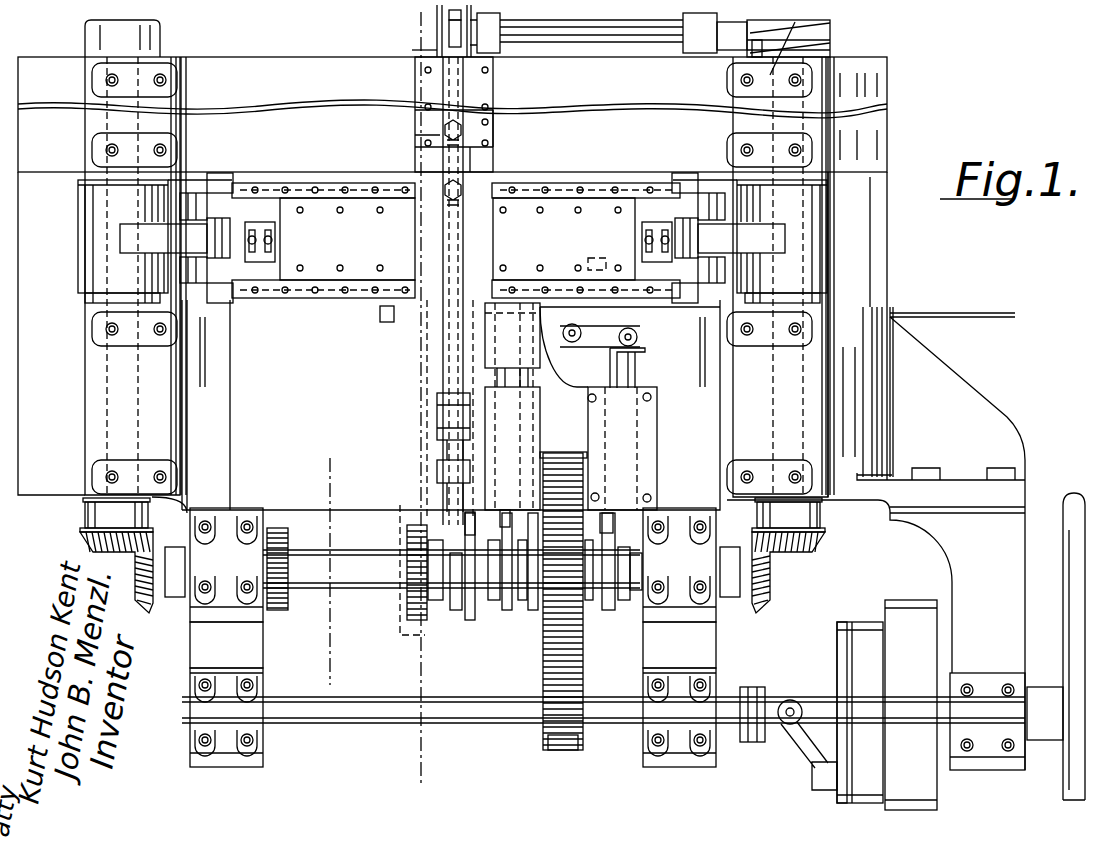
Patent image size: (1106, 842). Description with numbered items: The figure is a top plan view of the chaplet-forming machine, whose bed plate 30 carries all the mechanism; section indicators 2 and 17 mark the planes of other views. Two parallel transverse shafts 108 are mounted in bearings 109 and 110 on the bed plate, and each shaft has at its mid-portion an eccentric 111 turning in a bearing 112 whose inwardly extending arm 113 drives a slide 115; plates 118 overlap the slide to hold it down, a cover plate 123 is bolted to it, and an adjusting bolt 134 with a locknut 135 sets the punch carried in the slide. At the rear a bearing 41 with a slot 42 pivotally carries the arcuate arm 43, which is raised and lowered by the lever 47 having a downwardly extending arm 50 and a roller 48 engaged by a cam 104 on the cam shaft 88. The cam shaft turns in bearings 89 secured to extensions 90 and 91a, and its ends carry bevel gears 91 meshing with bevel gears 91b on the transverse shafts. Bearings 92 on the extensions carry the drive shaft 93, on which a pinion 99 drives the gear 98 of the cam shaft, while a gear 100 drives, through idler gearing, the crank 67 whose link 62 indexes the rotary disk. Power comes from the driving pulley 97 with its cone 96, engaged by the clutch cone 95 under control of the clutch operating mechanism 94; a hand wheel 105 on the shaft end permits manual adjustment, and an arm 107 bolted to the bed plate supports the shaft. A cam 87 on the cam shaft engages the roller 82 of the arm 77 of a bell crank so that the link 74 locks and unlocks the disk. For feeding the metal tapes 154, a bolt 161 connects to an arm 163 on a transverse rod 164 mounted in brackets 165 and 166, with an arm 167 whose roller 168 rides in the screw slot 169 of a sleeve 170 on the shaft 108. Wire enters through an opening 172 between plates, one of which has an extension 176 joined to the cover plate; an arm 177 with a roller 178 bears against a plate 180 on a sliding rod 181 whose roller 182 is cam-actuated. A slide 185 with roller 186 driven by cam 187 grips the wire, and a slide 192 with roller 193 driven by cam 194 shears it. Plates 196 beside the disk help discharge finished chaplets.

The bearing 110 is at (852, 52).
The transverse shaft 108 is at (118, 400).
The bearing 109 is at (92, 447).
The eccentric 111 is at (85, 302).
The bearing 112 is at (78, 213).
The inwardly extending arm 113 is at (165, 238).
The slide 115 is at (228, 212).
The plate 118 is at (346, 183).
The cover plate 123 is at (299, 210).
The adjusting bolt 134 is at (257, 232).
The locknut 135 is at (274, 222).
The extension 176 is at (597, 258).
The plate 196 is at (384, 322).
The bearing 41 is at (415, 128).
The slot 42 is at (492, 127).
The arcuate arm 43 is at (462, 165).
The bolt 161 is at (452, 52).
The arm 163 is at (449, 30).
The metal tape 154 is at (408, 51).
The bracket 165 is at (488, 30).
The transverse rod 164 is at (596, 30).
The bracket 166 is at (695, 35).
The upwardly extending arm 167 is at (742, 52).
The roller 168 is at (757, 48).
The screw slot 169 is at (826, 30).
The sleeve 170 is at (773, 59).
The link 74 is at (476, 371).
The link 62 is at (430, 400).
The lever 47 is at (447, 447).
The downwardly extending arm 50 is at (440, 466).
The arm 77 is at (465, 518).
The opening 172 is at (560, 318).
The roller 178 is at (638, 337).
The arm 177 is at (607, 347).
The slide 192 is at (545, 368).
The plate 180 is at (647, 350).
The sliding rod 181 is at (636, 378).
The slide 185 is at (523, 380).
The roller 186 is at (548, 508).
The roller 193 is at (505, 510).
The roller 182 is at (607, 520).
The bed plate 30 is at (552, 486).
The section line 17 is at (328, 670).
The section line 2 is at (418, 37).
The gear 100 is at (287, 549).
The cam shaft 88 is at (323, 586).
The crank 67 is at (406, 616).
The roller 48 is at (453, 572).
The roller 82 is at (457, 523).
The cam 87 is at (471, 616).
The cam 104 is at (467, 603).
The cam 187 is at (533, 610).
The cam 194 is at (506, 613).
The gear 98 is at (574, 619).
The pinion 99 is at (563, 734).
The drive shaft 93 is at (480, 718).
The extension 91a is at (653, 648).
The bevel gear 91b is at (835, 547).
The bevel gear 91 is at (150, 600).
The bearing 89 is at (186, 593).
The extension 90 is at (200, 647).
The bearing 92 is at (227, 744).
The clutch operating mechanism 94 is at (791, 708).
The clutch cone 95 is at (843, 627).
The cone 96 is at (863, 632).
The driving pulley 97 is at (906, 613).
The arm 107 is at (941, 541).
The hand wheel 105 is at (1068, 593).